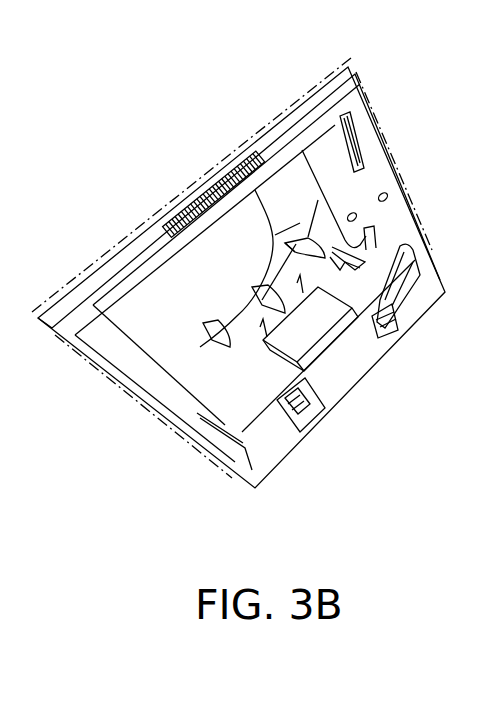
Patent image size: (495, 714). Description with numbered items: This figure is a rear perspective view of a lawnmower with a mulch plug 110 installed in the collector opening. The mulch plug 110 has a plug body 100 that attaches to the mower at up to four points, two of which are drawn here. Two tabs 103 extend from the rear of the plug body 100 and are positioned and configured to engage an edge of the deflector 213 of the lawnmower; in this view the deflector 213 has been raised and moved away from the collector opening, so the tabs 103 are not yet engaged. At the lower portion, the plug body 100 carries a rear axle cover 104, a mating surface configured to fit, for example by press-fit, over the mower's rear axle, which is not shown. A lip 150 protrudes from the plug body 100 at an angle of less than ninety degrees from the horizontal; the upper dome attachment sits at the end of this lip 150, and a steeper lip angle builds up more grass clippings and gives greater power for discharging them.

The lip 150 is at (287, 185).
The deflector 213 is at (180, 202).
The mulch plug body 100 is at (253, 307).
The mulch plug 110 is at (327, 355).
The tabs 103 is at (400, 318).
The rear axle cover 104 is at (243, 417).